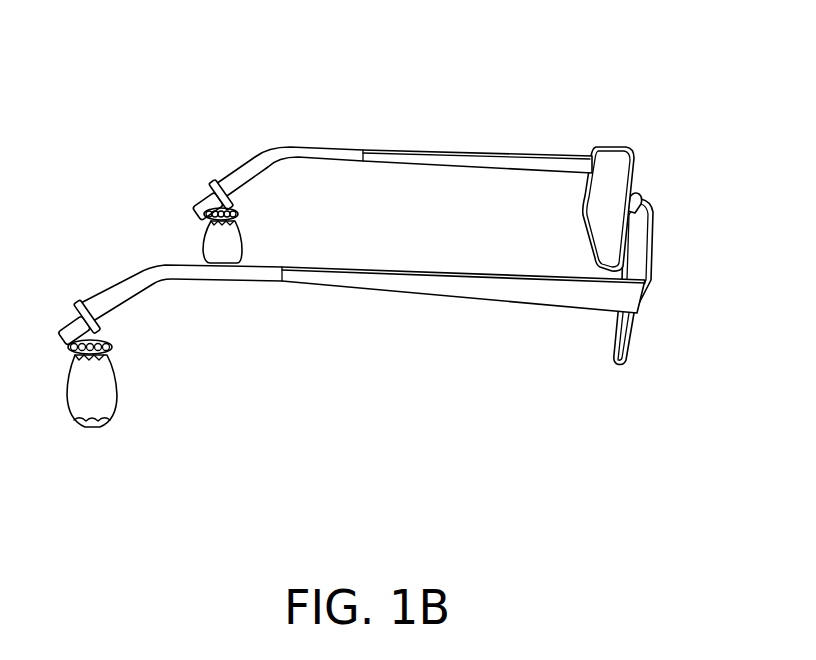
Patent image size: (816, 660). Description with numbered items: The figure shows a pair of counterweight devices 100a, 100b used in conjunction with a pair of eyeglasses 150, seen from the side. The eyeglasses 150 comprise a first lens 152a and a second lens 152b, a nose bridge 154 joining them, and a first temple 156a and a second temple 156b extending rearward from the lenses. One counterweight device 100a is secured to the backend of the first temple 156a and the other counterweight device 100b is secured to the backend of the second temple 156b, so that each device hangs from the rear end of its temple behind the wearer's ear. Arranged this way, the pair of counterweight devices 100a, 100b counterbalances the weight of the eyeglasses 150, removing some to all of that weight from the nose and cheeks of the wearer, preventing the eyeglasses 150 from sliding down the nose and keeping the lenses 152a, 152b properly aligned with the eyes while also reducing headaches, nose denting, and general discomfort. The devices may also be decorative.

The eyeglasses 150 is at (421, 224).
The first lens 152a is at (620, 162).
The second lens 152b is at (652, 240).
The nose bridge 154 is at (636, 198).
The first temple 156a is at (432, 158).
The second temple 156b is at (457, 277).
The counterweight device 100a is at (227, 250).
The counterweight device 100b is at (100, 395).